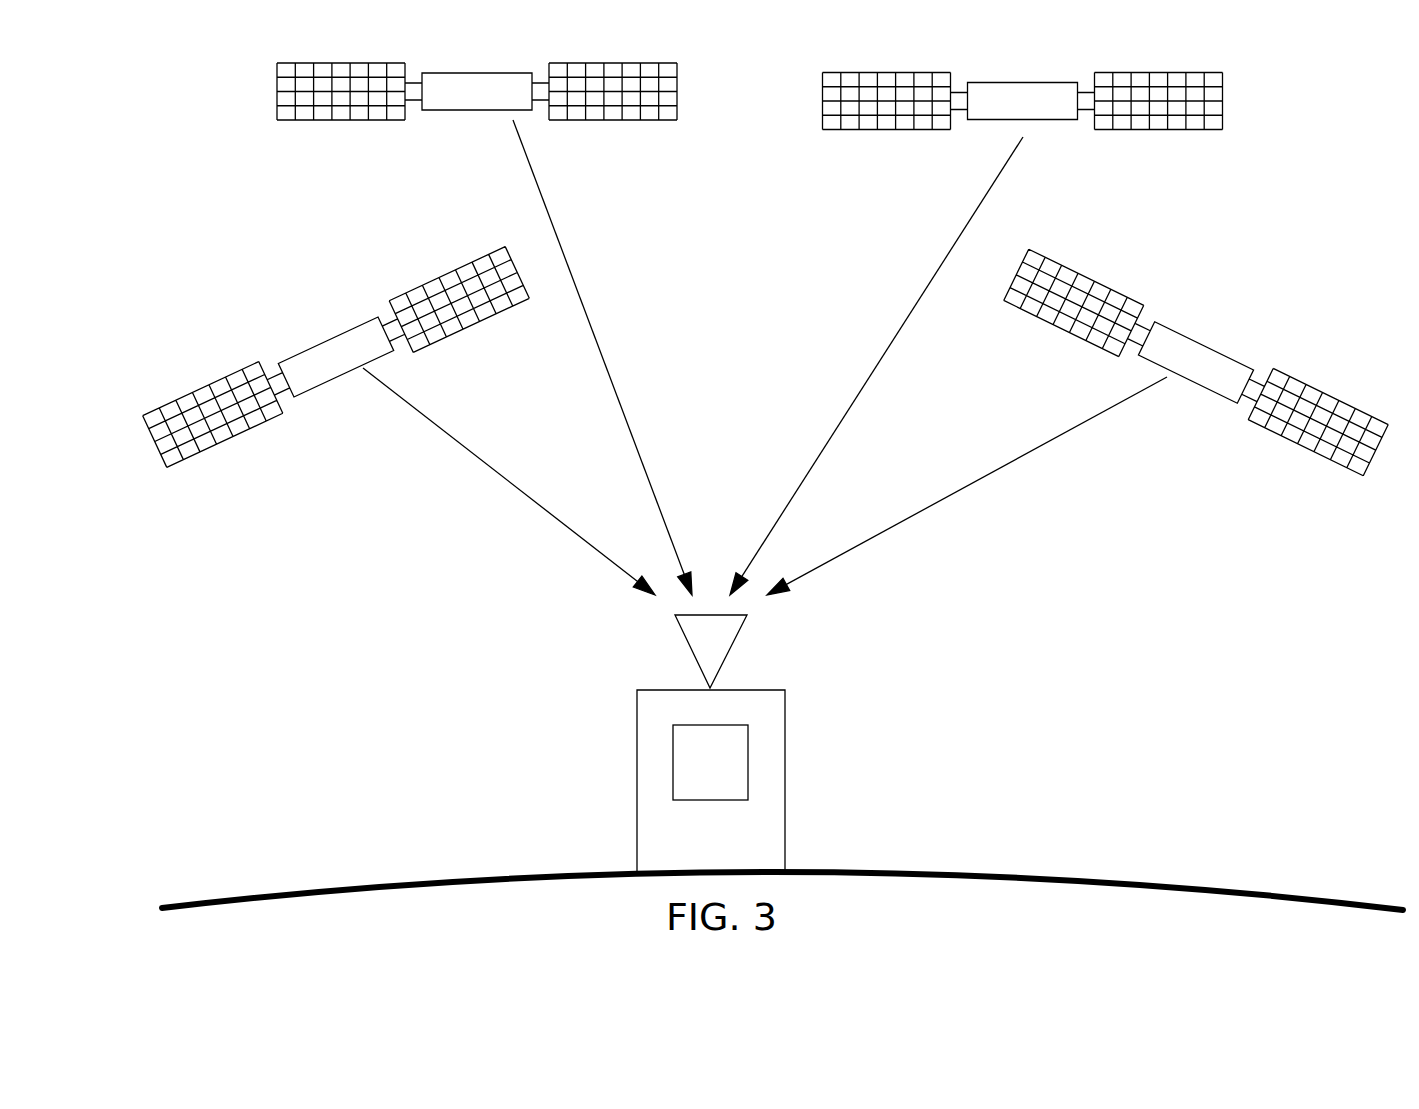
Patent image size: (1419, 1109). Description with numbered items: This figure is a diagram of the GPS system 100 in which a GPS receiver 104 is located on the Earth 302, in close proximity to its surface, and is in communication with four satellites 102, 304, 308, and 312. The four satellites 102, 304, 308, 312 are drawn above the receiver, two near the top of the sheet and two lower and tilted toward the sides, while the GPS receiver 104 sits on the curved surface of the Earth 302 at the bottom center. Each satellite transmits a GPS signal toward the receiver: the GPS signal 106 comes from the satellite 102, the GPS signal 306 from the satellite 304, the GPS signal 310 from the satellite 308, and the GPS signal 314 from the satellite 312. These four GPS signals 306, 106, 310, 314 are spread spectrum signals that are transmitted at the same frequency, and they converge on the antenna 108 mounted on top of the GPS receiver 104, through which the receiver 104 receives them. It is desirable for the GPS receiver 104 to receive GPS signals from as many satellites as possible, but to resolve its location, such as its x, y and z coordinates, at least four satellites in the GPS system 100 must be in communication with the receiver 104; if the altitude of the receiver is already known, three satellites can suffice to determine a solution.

The GPS system 100 is at (762, 60).
The satellite 102 is at (460, 110).
The GPS receiver 104 is at (785, 773).
The GPS signal 106 is at (604, 357).
The antenna 108 is at (693, 655).
The Earth 302 is at (918, 871).
The satellite 304 is at (330, 340).
The GPS signal 306 is at (455, 440).
The satellite 308 is at (1050, 119).
The GPS signal 310 is at (863, 387).
The satellite 312 is at (1185, 332).
The GPS signal 314 is at (912, 518).